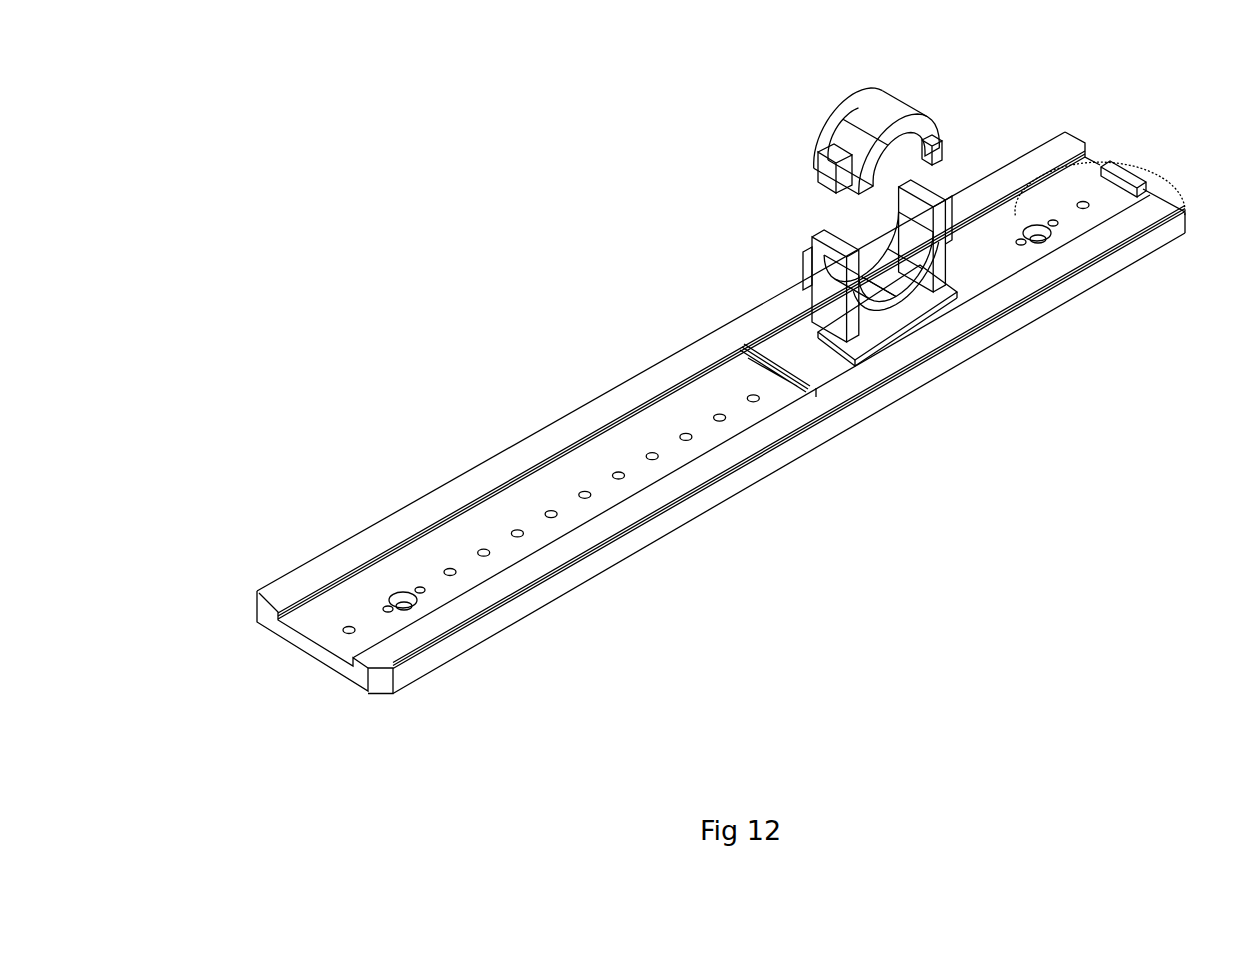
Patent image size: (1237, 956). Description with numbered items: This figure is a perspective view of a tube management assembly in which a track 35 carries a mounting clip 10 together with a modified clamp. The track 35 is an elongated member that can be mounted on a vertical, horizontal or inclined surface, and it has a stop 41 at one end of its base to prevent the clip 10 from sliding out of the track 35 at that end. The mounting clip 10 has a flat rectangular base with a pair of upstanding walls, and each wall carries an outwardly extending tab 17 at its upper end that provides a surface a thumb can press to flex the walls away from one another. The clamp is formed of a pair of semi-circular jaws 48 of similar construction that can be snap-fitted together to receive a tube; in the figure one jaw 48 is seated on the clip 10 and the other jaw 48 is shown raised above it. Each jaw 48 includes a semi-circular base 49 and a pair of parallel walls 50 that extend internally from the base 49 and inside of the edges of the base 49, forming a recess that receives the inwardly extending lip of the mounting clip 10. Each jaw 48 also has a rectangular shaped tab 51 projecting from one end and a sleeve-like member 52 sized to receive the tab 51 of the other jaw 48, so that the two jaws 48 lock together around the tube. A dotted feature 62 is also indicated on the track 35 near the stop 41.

The mounting clip 10 is at (848, 330).
The tab 17 is at (935, 315).
The track 35 is at (437, 483).
The stop 41 is at (1138, 165).
The semi-circular jaw 48 is at (840, 90).
The semi-circular base 49 is at (882, 100).
The parallel wall 50 is at (920, 150).
The rectangular shaped tab 51 is at (942, 156).
The sleeve-like member 52 is at (816, 178).
The circular recess 62 is at (1148, 258).